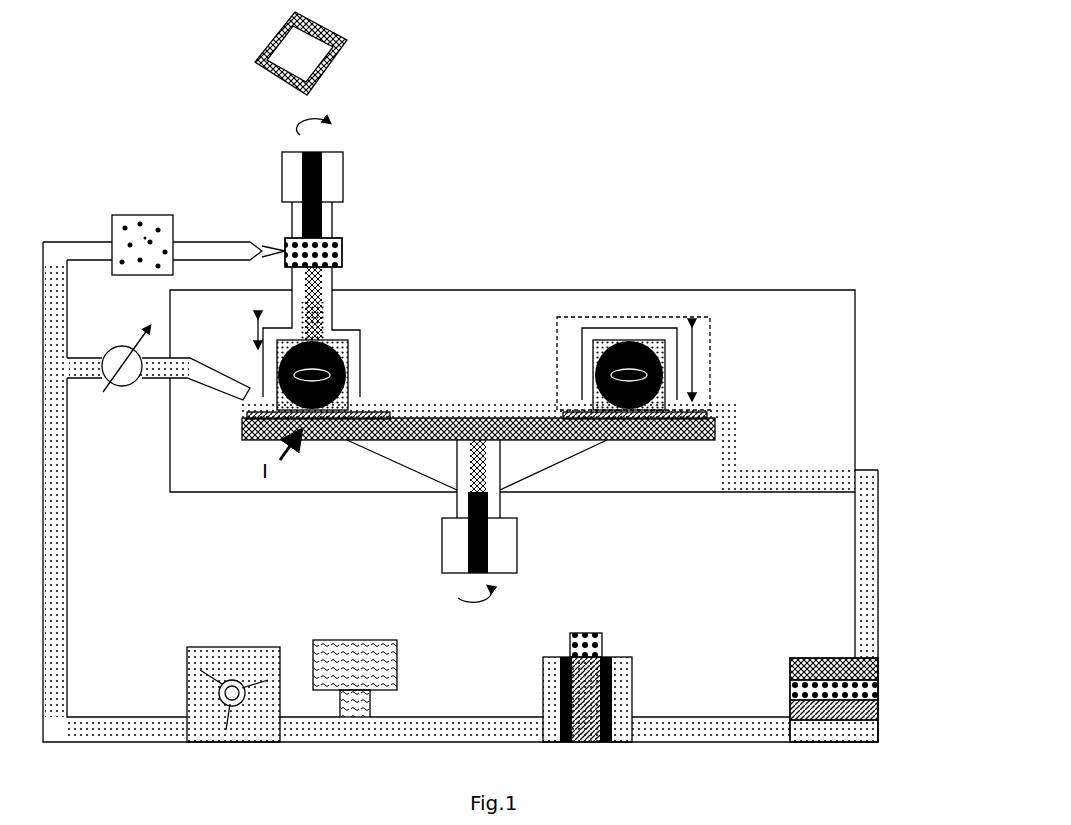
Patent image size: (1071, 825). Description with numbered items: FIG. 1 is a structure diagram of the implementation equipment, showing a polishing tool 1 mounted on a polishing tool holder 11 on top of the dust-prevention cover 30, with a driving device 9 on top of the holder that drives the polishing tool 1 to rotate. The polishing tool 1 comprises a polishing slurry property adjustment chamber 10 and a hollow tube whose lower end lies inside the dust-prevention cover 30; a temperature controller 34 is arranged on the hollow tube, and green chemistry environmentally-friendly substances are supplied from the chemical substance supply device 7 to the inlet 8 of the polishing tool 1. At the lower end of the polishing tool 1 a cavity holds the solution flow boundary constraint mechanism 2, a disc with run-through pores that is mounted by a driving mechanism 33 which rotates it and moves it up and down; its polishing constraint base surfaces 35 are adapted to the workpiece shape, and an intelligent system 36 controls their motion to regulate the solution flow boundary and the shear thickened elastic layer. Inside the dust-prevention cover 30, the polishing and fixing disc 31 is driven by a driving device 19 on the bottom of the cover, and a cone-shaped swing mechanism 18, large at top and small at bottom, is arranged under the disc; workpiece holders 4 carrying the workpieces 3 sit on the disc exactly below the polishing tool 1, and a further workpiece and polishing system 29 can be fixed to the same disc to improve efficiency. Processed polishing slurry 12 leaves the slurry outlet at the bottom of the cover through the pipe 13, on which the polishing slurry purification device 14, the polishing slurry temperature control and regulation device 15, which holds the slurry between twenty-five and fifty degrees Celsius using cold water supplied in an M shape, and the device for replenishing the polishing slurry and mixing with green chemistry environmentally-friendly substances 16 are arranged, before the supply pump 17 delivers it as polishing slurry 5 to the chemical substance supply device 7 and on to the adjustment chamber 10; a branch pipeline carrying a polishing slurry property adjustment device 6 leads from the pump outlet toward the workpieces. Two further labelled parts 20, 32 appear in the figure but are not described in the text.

The polishing tool 1 is at (343, 335).
The solution flow boundary constraint mechanism 2 is at (350, 363).
The workpiece 3 is at (257, 440).
The workpiece holder 4 is at (347, 437).
The polishing slurry 5 is at (55, 455).
The polishing slurry property adjustment device 6 is at (118, 385).
The chemical substance supply device 7 is at (122, 215).
The inlet 8 is at (280, 250).
The driving device 9 is at (282, 165).
The polishing slurry property adjustment chamber 10 is at (320, 257).
The polishing tool holder 11 is at (335, 303).
The processed polishing slurry 12 is at (805, 472).
The pipe 13 is at (880, 525).
The polishing slurry purification device 14 is at (848, 690).
The polishing slurry temperature control and regulation device 15 is at (612, 683).
The device for replenishing the polishing slurry and mixing with green chemistry env 16 is at (385, 675).
The supply pump 17 is at (218, 658).
The swing mechanism 18 is at (532, 462).
The driving device 19 is at (442, 540).
The platen body 20 is at (450, 430).
The polishing system 29 is at (712, 358).
The dust-prevention cover 30 is at (855, 330).
The polishing and fixing disc 31 is at (477, 418).
The retaining ring 32 is at (330, 405).
The driving mechanism 33 is at (234, 333).
The temperature controller 34 is at (303, 323).
The polishing constraint base surface 35 is at (270, 405).
The intelligent system 36 is at (278, 55).